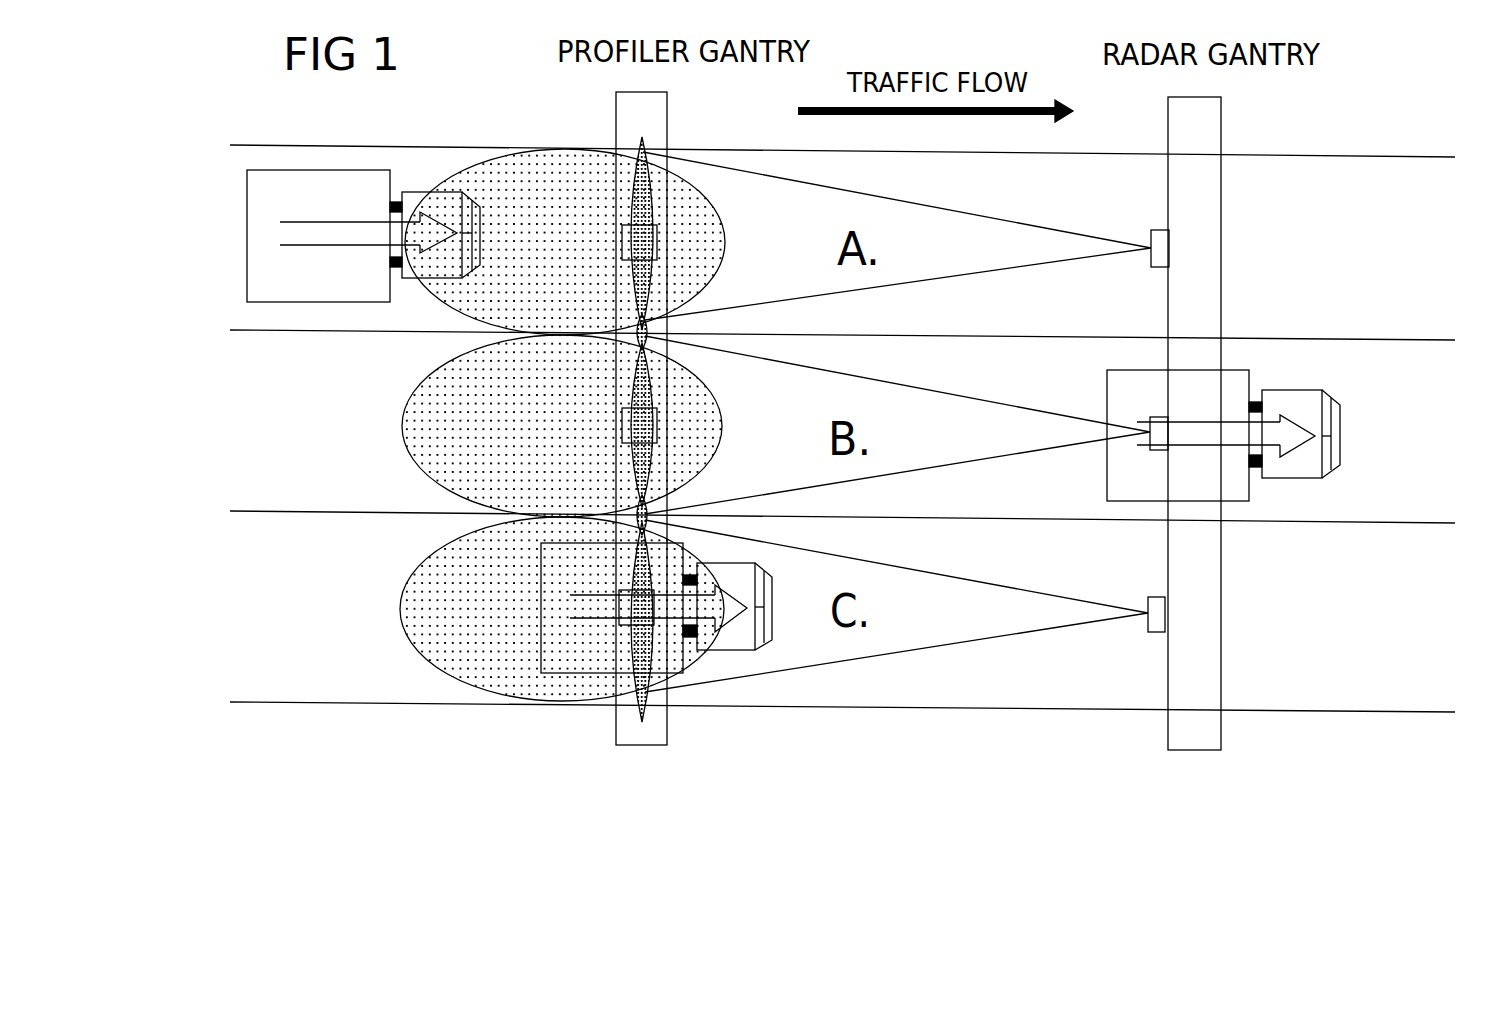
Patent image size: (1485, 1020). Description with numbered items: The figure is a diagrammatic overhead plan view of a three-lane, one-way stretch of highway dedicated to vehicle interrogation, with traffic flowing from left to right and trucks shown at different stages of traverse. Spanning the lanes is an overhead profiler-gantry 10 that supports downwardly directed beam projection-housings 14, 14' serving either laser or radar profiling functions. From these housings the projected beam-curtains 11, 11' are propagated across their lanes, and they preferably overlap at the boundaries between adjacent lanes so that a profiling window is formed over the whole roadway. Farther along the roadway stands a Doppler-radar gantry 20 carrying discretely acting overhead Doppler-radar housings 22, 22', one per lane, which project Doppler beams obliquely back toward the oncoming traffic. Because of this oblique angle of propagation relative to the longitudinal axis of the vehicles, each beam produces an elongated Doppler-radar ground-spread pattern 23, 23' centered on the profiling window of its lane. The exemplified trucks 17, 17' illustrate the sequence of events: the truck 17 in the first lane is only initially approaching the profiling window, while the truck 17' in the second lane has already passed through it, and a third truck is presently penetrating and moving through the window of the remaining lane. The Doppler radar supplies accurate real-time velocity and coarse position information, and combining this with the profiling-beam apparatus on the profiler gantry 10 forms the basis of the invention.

The overhead profiler-gantry 10 is at (612, 123).
The Doppler-radar gantry 20 is at (1232, 137).
The projected beam-curtain 11 is at (702, 243).
The projected beam-curtain 11' is at (707, 439).
The beam projection-housing 14 is at (697, 224).
The beam projection-housing 14' is at (702, 414).
The exemplified truck 17 is at (363, 278).
The exemplified truck 17' is at (1247, 472).
The overhead Doppler-radar housing 22 is at (906, 236).
The overhead Doppler-radar housing 22' is at (906, 425).
The Doppler-radar ground-spread pattern 23 is at (565, 219).
The Doppler-radar ground-spread pattern 23' is at (516, 426).